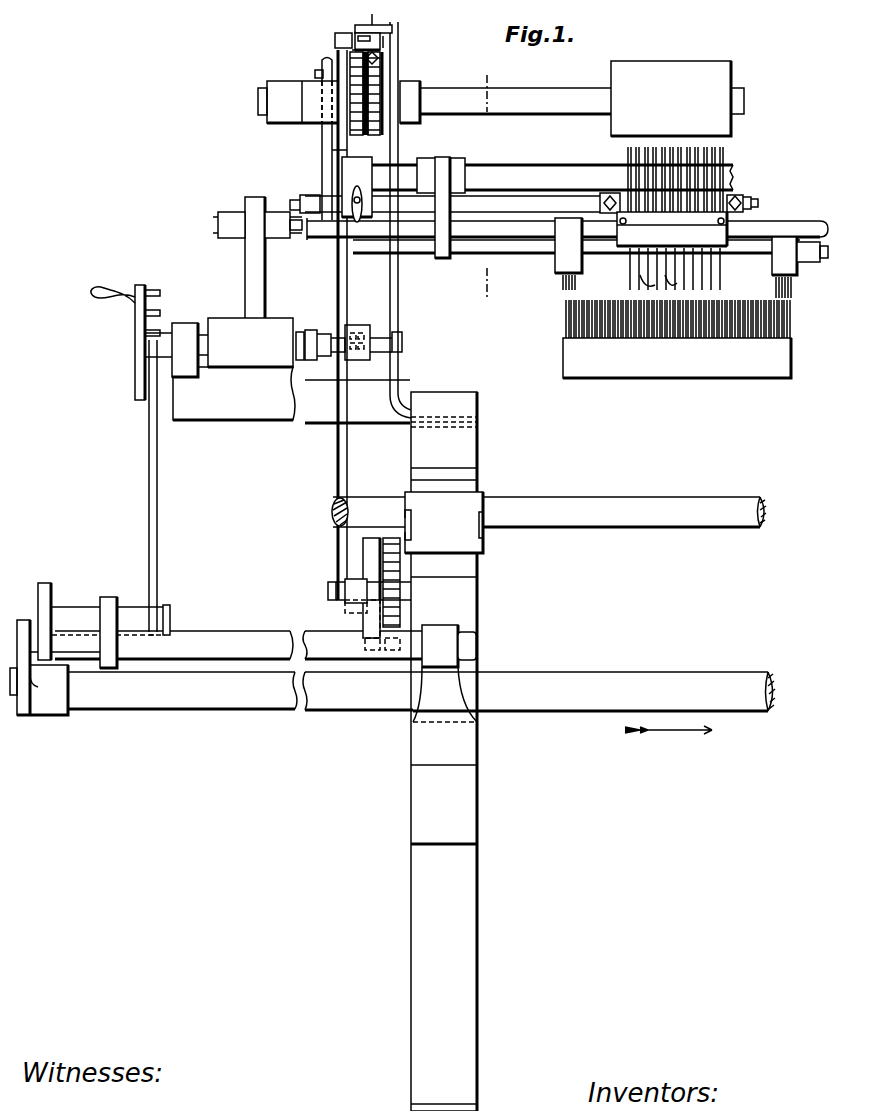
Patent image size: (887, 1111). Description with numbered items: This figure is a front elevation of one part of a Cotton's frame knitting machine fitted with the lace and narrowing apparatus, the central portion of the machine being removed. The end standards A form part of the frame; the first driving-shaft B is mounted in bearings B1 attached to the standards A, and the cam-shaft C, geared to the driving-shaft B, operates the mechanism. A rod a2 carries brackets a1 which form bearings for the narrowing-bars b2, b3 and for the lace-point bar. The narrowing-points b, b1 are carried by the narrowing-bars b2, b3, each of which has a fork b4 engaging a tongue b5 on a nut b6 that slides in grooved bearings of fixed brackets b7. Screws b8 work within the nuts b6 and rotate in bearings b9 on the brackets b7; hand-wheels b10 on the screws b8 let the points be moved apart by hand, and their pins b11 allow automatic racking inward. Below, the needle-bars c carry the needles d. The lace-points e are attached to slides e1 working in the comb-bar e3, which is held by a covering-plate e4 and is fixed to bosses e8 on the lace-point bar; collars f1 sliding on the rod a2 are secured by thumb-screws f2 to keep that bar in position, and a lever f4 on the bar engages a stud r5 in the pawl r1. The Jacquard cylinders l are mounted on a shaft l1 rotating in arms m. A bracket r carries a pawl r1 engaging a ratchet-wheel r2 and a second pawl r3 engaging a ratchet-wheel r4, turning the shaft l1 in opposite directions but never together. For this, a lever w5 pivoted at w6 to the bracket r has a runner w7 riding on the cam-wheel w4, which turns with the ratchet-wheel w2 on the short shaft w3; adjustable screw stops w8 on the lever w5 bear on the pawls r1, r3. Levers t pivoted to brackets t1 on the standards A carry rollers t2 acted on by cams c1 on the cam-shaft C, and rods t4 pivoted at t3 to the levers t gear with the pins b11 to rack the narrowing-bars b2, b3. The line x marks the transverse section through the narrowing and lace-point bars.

The end standards A is at (444, 751).
The first driving-shaft B is at (549, 512).
The bearings B1 is at (444, 522).
The cam-shaft C is at (417, 703).
The brackets a1 is at (441, 258).
The rod a2 is at (552, 177).
The narrowing-points b is at (562, 275).
The narrowing-points b1 is at (792, 278).
The narrowing-bar b2 is at (567, 229).
The narrowing-bar b3 is at (491, 257).
The fork b4 is at (240, 224).
The tongue b5 is at (245, 257).
The nut b6 is at (245, 342).
The fixed brackets b7 is at (234, 393).
The screws b8 is at (307, 332).
The bearings b9 is at (305, 380).
The hand-wheels b10 is at (135, 310).
The projections or pins b11 is at (152, 290).
The needle-bars c is at (677, 358).
The cams c1 is at (22, 620).
The needles d is at (747, 302).
The lace-points e is at (663, 288).
The slides e1 is at (626, 256).
The comb-bar e3 is at (675, 186).
The covering-plate e4 is at (672, 229).
The bosses e8 is at (598, 202).
The collars f1 is at (331, 187).
The thumb-screws f2 is at (352, 201).
The lever f4 is at (322, 163).
The Jacquard cylinders l is at (671, 98).
The Jacquard cylinder-shaft l1 is at (754, 101).
The arms m is at (339, 102).
The bracket r is at (398, 32).
The pawl r1 is at (344, 32).
The ratchet-wheel r2 is at (332, 150).
The pawl r3 is at (379, 12).
The ratchet-wheel r4 is at (380, 87).
The stud r5 is at (315, 70).
The levers t is at (108, 603).
The brackets t1 is at (445, 690).
The rollers t2 is at (51, 592).
The pivot t3 is at (170, 609).
The rods t4 is at (157, 518).
The ratchet-wheel w2 is at (400, 601).
The short shaft w3 is at (328, 592).
The cam-wheel w4 is at (366, 631).
The lever w5 is at (337, 466).
The pivot w6 is at (402, 338).
The runner w7 is at (365, 604).
The adjustable screw stops w8 is at (352, 51).
The section line x is at (484, 187).